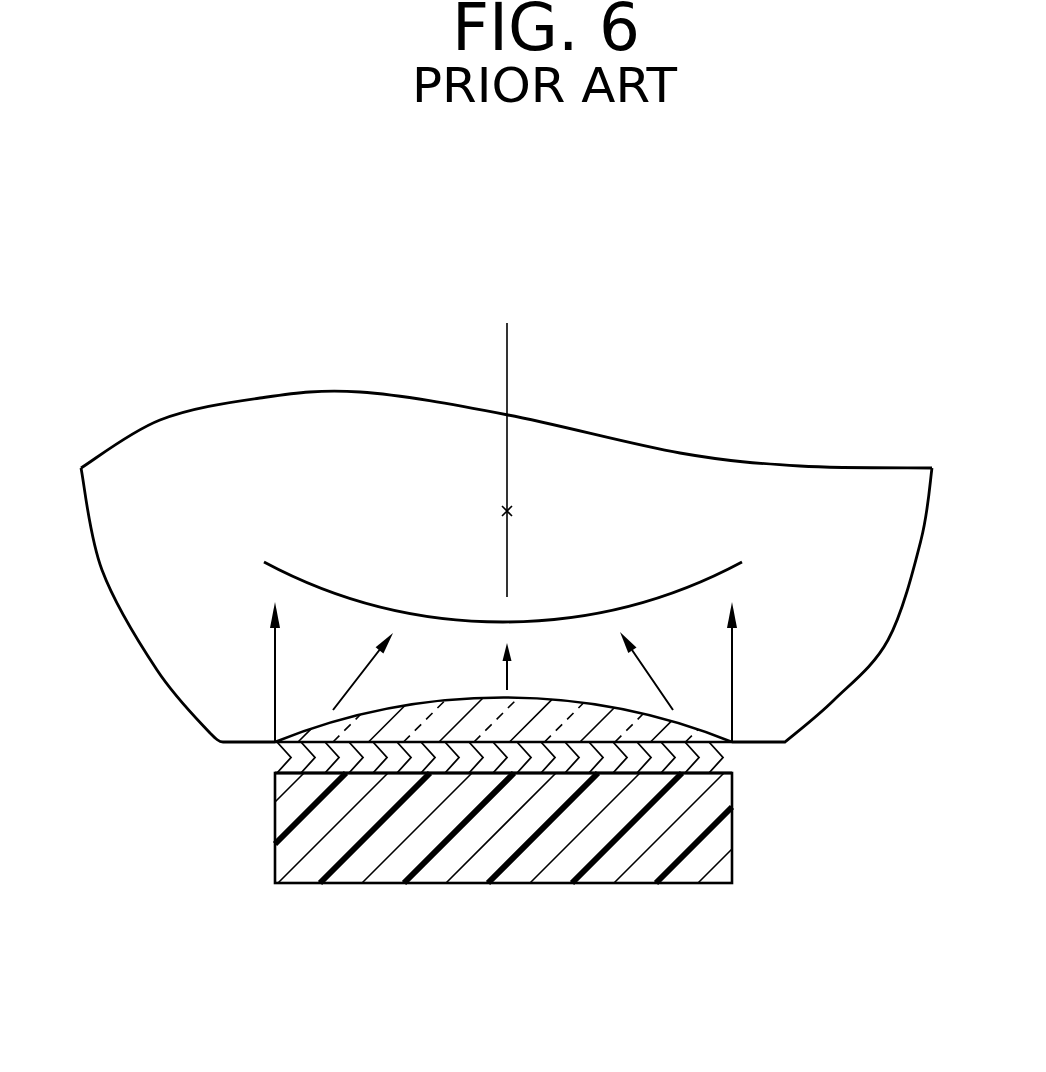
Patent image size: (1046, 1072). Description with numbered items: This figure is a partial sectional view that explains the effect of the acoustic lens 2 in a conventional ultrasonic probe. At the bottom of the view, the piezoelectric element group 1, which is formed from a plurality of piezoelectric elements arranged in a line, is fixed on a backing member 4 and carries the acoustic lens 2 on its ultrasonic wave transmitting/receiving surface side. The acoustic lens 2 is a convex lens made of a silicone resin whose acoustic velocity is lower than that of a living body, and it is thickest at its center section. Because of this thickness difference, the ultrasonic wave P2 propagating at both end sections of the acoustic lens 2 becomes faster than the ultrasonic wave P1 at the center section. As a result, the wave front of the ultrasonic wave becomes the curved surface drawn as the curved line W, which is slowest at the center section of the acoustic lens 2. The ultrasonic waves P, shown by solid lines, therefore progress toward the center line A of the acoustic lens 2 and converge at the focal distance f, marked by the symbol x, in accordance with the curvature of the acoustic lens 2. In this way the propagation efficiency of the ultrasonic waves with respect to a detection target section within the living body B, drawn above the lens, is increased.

The piezoelectric element group 1 is at (407, 871).
The acoustic lens 2 is at (335, 732).
The backing member 4 is at (640, 835).
The living body B is at (730, 498).
The curved line W is at (743, 565).
The center line A is at (509, 443).
The focal distance f is at (520, 511).
The ultrasonic waves P is at (503, 671).
The ultrasonic wave at the center section P1 is at (528, 667).
The ultrasonic wave at both end sections P2 is at (504, 672).